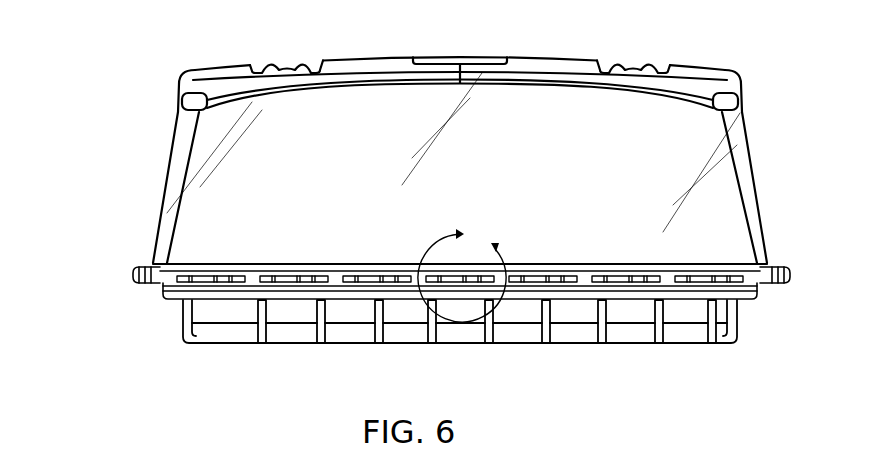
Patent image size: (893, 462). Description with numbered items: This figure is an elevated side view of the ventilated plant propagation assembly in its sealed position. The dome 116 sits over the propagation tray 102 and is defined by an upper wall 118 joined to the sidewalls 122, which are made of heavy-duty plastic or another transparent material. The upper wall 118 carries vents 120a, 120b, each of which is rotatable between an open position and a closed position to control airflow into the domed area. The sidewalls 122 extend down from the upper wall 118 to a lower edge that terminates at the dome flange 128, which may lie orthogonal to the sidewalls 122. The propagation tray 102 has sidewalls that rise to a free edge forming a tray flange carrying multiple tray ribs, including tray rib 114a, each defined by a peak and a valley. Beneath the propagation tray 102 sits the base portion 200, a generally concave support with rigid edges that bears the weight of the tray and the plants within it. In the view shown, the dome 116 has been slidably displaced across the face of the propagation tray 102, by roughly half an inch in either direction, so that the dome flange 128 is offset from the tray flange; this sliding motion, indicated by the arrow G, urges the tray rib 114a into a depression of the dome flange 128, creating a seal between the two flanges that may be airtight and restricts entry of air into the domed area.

The propagation tray 102 is at (160, 284).
The tray rib 114a is at (220, 282).
The dome 116 is at (157, 166).
The upper wall 118 is at (380, 58).
The vent 120a is at (281, 63).
The vent 120b is at (617, 63).
The sidewalls of the dome 122 is at (276, 189).
The dome flange 128 is at (133, 272).
The base portion 200 is at (173, 327).
The rotation direction G is at (462, 275).